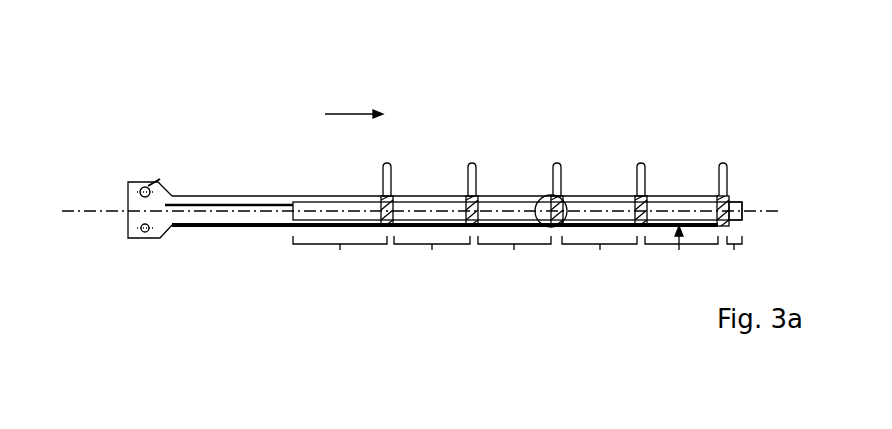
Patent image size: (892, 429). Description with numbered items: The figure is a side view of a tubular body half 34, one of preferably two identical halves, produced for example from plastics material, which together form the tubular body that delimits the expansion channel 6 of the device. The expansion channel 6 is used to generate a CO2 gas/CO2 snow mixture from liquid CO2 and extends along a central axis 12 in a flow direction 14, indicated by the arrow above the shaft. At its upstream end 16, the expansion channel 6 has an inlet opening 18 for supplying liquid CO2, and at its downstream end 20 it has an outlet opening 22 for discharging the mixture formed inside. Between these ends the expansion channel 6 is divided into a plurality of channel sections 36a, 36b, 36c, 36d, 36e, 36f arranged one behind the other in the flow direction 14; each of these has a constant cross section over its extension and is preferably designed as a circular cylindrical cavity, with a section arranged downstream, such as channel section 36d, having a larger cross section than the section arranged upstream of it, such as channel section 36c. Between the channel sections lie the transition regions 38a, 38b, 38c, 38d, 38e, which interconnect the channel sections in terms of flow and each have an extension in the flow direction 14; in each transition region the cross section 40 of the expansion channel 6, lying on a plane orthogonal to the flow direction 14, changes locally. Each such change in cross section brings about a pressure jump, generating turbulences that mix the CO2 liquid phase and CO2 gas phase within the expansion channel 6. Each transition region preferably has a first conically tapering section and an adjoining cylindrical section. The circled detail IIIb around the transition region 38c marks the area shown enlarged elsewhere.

The expansion channel 6 is at (341, 203).
The central axis 12 is at (92, 213).
The flow direction 14 is at (348, 114).
The upstream end 16 is at (96, 198).
The inlet opening 18 is at (131, 206).
The downstream end 20 is at (768, 218).
The outlet opening 22 is at (738, 203).
The tubular body half 34 is at (434, 81).
The channel section 36a is at (340, 256).
The channel section 36b is at (432, 256).
The channel section 36c is at (514, 256).
The channel section 36d is at (599, 256).
The channel section 36e is at (681, 256).
The channel section 36f is at (742, 256).
The transition region 38a is at (394, 182).
The transition region 38b is at (479, 182).
The transition region 38c is at (559, 182).
The transition region 38d is at (644, 182).
The transition region 38e is at (731, 182).
The cross section 40 is at (679, 188).
The detail view region IIIb is at (571, 189).